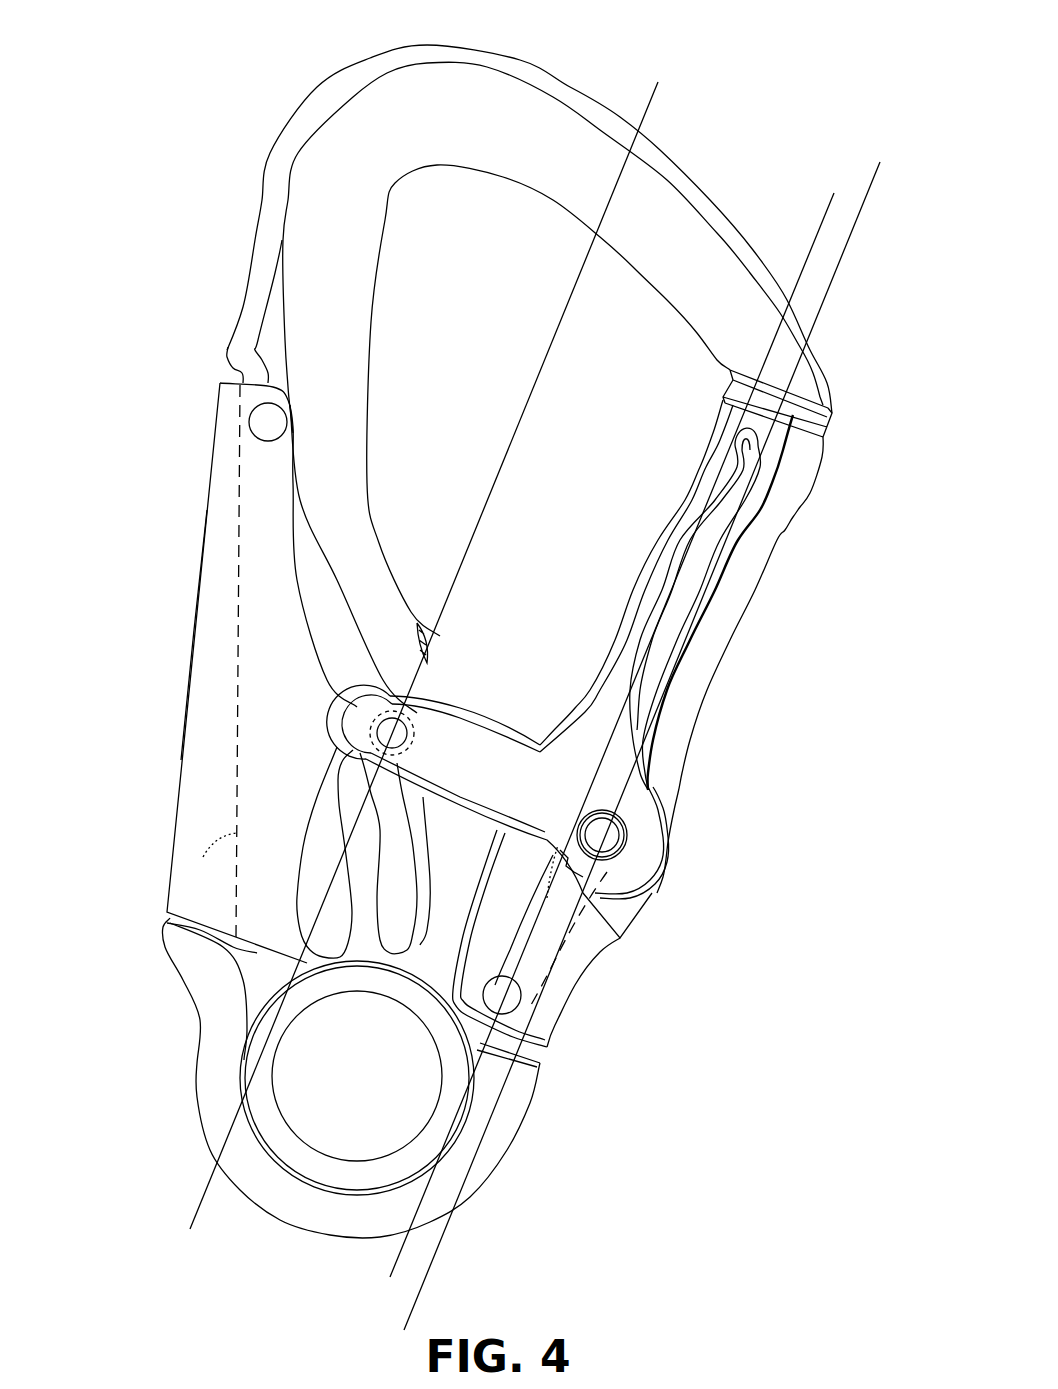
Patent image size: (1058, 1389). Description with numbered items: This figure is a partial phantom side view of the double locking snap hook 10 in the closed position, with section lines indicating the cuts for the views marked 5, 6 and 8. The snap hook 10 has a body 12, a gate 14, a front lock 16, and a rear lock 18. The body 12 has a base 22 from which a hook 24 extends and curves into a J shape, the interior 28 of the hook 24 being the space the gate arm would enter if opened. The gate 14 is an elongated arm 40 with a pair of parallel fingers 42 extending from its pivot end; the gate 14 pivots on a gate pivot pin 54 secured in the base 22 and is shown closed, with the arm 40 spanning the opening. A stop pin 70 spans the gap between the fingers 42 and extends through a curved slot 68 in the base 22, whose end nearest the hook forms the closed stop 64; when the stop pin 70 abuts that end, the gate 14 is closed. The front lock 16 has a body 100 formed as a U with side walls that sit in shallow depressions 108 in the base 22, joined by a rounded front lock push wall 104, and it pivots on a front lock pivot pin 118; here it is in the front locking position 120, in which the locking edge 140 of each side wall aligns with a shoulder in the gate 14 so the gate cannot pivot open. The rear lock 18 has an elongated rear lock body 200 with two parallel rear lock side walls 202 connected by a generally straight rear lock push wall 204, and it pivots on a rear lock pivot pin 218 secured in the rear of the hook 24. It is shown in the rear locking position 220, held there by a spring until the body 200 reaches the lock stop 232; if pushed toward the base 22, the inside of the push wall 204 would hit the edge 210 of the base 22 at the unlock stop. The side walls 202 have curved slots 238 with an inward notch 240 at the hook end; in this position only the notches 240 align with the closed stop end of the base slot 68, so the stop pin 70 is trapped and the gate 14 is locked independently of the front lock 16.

The double locking snap hook 10 is at (762, 68).
The body 12 is at (480, 45).
The gate 14 is at (742, 620).
The front lock 16 is at (612, 985).
The rear lock 18 is at (185, 630).
The base 22 is at (200, 1108).
The hook 24 is at (368, 62).
The interior 28 is at (548, 400).
The arm 40 is at (713, 688).
The fingers 42 is at (510, 722).
The gate pivot pin 54 is at (603, 832).
The closed stop 64 is at (342, 715).
The curved slot 68 is at (402, 910).
The stop pin 70 is at (404, 740).
The body 100 is at (562, 1012).
The front lock push wall 104 is at (585, 978).
The shallow depressions 108 is at (495, 890).
The front lock pivot pin 118 is at (497, 997).
The front locking position 120 is at (632, 925).
The locking edge 140 is at (551, 882).
The rear lock body 200 is at (177, 812).
The rear lock side walls 202 is at (297, 650).
The rear lock push wall 204 is at (180, 752).
The edge 210 is at (205, 859).
The rear lock pivot pin 218 is at (278, 421).
The rear locking position 220 is at (152, 680).
The lock stop 232 is at (433, 690).
The curved slots 238 is at (308, 830).
The inward notch 240 is at (390, 713).
The section line 5- 5 is at (880, 162).
The section line 6- 6 is at (834, 193).
The section line 8- 8 is at (658, 82).